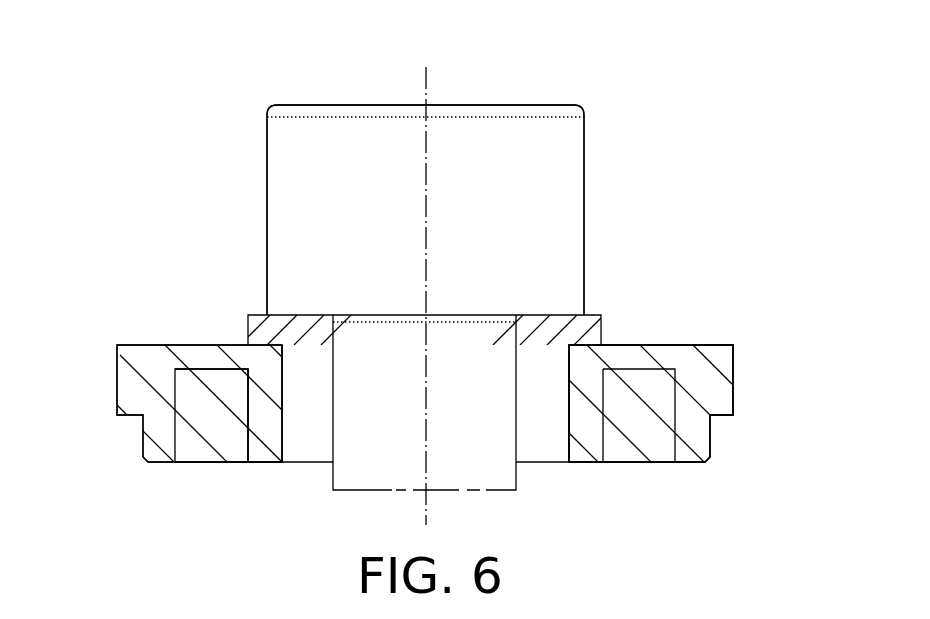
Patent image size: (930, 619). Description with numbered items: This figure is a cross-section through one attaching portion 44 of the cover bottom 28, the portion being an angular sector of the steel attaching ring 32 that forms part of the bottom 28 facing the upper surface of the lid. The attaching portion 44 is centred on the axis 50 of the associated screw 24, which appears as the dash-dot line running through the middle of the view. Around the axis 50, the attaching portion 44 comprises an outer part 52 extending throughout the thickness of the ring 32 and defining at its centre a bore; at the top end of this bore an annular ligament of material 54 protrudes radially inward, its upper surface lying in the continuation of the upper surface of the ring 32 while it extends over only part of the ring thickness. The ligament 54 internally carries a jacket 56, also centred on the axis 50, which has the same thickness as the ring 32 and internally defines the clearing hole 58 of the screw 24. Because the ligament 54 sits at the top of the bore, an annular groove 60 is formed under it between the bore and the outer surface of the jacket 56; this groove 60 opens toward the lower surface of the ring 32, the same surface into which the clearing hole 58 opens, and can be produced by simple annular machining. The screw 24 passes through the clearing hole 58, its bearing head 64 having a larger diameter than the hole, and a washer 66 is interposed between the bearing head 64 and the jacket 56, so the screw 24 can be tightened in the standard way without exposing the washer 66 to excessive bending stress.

The screw 24 is at (293, 187).
The axis 50 is at (426, 83).
The bearing head 64 is at (545, 122).
The washer 66 is at (258, 330).
The outer part 52 is at (140, 360).
The annular ligament of material 54 is at (632, 358).
The attaching ring 32 is at (746, 358).
The bottom 28 is at (748, 408).
The attaching portion 44 is at (155, 450).
The groove 60 is at (208, 443).
The clearing hole 58 is at (283, 445).
The jacket 56 is at (588, 438).